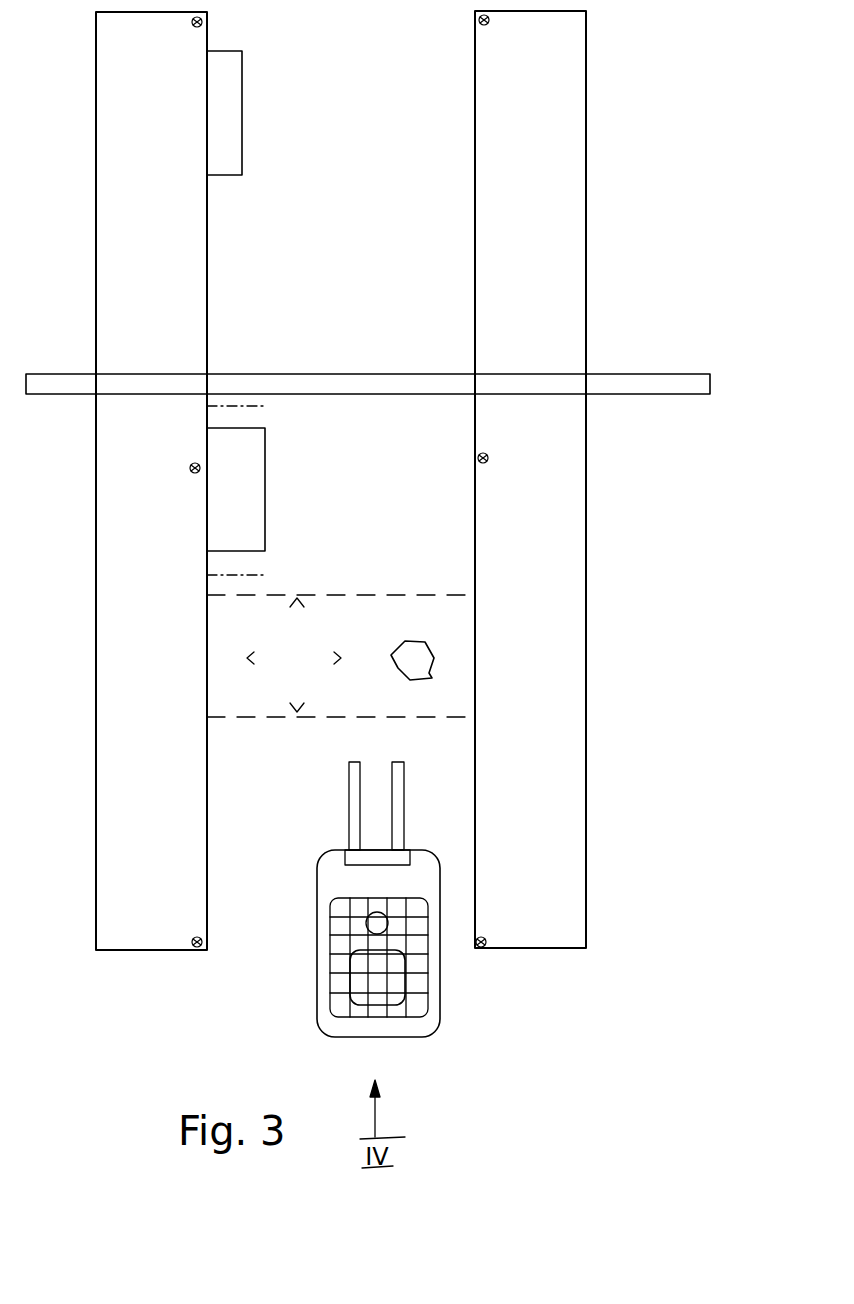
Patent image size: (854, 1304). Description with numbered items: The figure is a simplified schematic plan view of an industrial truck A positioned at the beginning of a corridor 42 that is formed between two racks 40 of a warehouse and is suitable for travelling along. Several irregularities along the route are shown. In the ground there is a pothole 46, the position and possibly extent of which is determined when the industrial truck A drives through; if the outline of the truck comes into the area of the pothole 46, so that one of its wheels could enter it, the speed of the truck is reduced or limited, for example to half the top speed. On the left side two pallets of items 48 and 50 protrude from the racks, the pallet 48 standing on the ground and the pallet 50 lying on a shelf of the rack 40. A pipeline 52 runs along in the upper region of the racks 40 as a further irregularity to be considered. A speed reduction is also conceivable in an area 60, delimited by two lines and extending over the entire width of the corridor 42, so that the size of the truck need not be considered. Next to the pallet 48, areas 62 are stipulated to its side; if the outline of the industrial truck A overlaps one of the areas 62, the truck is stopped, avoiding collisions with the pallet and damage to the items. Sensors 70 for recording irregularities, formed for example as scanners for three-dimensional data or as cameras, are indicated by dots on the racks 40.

The rack 40 is at (128, 820).
The corridor 42 is at (373, 536).
The pothole 46 is at (412, 657).
The pallet of items 48 is at (236, 489).
The pallet of items 50 is at (228, 166).
The pipeline 52 is at (334, 384).
The area 60 is at (282, 682).
The areas 62 is at (262, 410).
The sensors 70 is at (195, 30).
The industrial truck A is at (436, 1030).